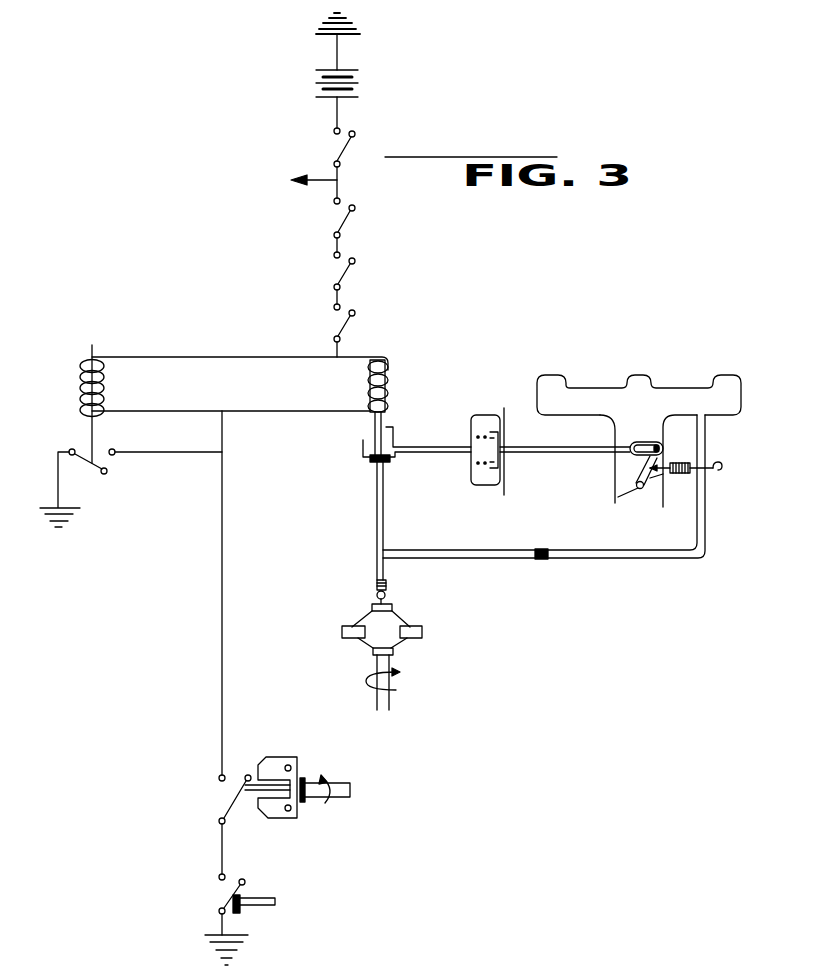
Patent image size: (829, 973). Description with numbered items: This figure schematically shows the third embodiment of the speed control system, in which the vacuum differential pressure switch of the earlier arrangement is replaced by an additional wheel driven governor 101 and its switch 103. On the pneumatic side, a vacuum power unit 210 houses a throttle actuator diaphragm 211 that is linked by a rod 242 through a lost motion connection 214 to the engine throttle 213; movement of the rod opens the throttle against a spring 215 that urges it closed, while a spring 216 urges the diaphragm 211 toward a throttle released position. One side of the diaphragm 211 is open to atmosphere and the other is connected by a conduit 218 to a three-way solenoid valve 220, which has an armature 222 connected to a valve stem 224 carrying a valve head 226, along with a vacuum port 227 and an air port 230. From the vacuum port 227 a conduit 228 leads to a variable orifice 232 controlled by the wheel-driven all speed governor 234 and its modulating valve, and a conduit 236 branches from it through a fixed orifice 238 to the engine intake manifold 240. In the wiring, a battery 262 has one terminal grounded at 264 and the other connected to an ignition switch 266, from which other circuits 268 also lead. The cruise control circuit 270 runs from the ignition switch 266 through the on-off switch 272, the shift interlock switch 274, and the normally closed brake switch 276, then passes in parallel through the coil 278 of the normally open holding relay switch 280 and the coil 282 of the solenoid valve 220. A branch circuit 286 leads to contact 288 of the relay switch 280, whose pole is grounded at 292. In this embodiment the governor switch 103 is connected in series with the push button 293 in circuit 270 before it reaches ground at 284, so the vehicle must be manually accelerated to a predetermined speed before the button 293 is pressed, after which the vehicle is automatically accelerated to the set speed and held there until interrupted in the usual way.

The wheel driven governor 101 is at (272, 760).
The wheel driven governor switch 103 is at (236, 808).
The vacuum power unit 210 is at (480, 406).
The throttle actuator diaphragm 211 is at (503, 440).
The engine throttle 213 is at (618, 500).
The lost motion connection 214 is at (645, 440).
The spring 215 is at (690, 472).
The spring 216 is at (482, 485).
The conduit 218 is at (447, 454).
The three-way solenoid valve 220 is at (360, 425).
The armature 222 is at (390, 376).
The valve stem 224 is at (383, 428).
The valve head 226 is at (384, 462).
The vacuum port 227 is at (378, 462).
The conduit 228 is at (377, 512).
The air port 230 is at (388, 432).
The variable orifice 232 is at (390, 594).
The wheel-driven all speed governor 234 is at (406, 645).
The conduit 236 is at (452, 552).
The fixed orifice 238 is at (543, 548).
The engine intake manifold 240 is at (716, 414).
The piston rod 242 is at (540, 453).
The battery 262 is at (358, 80).
The ground 264 is at (348, 24).
The ignition switch 266 is at (340, 150).
The other circuits line 268 is at (312, 186).
The cruise control circuit line 270 is at (342, 186).
The on-off switch 272 is at (350, 226).
The shift interlock switch 274 is at (352, 276).
The brake switch 276 is at (350, 326).
The relay coil 278 is at (105, 385).
The holding relay switch 280 is at (100, 448).
The solenoid valve coil 282 is at (368, 375).
The ground 284 is at (238, 948).
The branch circuit 286 is at (140, 455).
The relay switch contact 288 is at (112, 474).
The ground 292 is at (75, 512).
The push button 293 is at (258, 902).